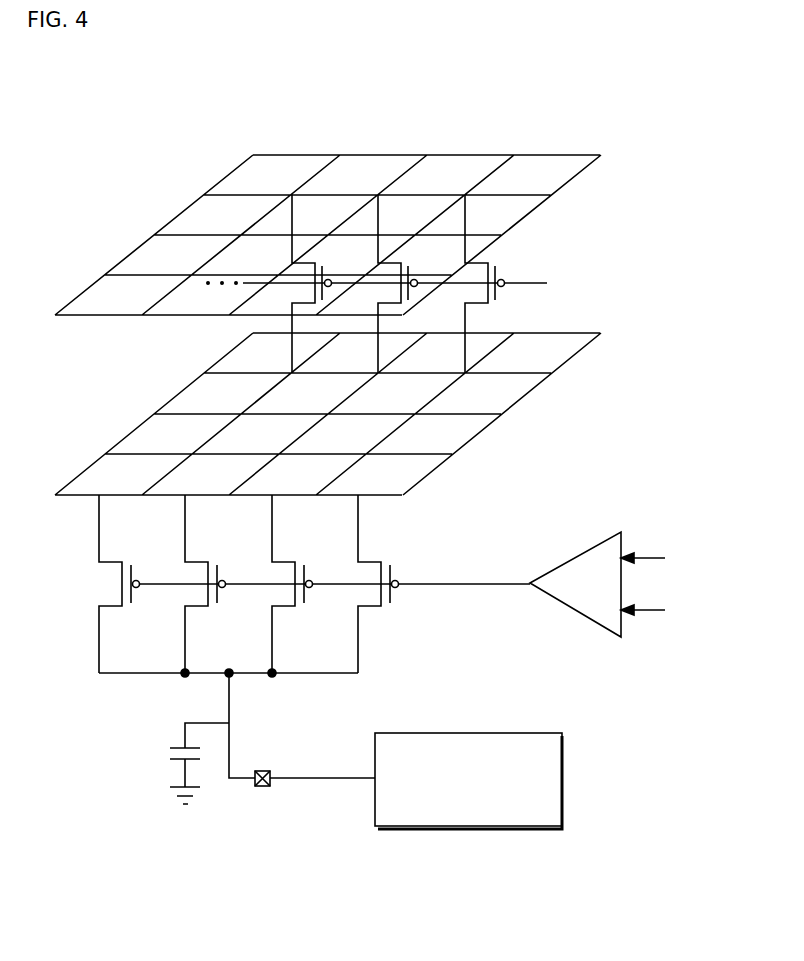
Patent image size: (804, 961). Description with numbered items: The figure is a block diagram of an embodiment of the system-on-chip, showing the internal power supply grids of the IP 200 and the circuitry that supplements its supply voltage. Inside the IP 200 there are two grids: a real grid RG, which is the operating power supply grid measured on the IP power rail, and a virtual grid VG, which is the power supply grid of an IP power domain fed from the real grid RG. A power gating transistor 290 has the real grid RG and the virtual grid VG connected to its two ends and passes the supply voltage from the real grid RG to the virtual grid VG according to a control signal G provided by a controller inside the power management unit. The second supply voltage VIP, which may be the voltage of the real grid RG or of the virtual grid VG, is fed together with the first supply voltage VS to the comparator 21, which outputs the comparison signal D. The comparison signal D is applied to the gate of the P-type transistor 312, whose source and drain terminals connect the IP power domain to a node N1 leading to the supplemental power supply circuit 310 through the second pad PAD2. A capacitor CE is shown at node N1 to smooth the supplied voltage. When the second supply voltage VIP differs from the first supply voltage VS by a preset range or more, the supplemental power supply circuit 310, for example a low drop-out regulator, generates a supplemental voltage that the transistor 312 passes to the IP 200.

The IP 200 is at (353, 278).
The real grid RG is at (137, 250).
The virtual grid VG is at (125, 437).
The power gating transistor 290 is at (380, 284).
The control signal G is at (531, 270).
The P-type transistor 312 is at (283, 600).
The comparison signal D is at (425, 570).
The first node N1 is at (277, 693).
The comparator 21 is at (612, 572).
The second supply voltage VIP is at (681, 563).
The first supply voltage VS is at (679, 615).
The capacitor CE is at (186, 763).
The second pad PAD2 is at (260, 798).
The supplemental power supply circuit 310 is at (561, 733).